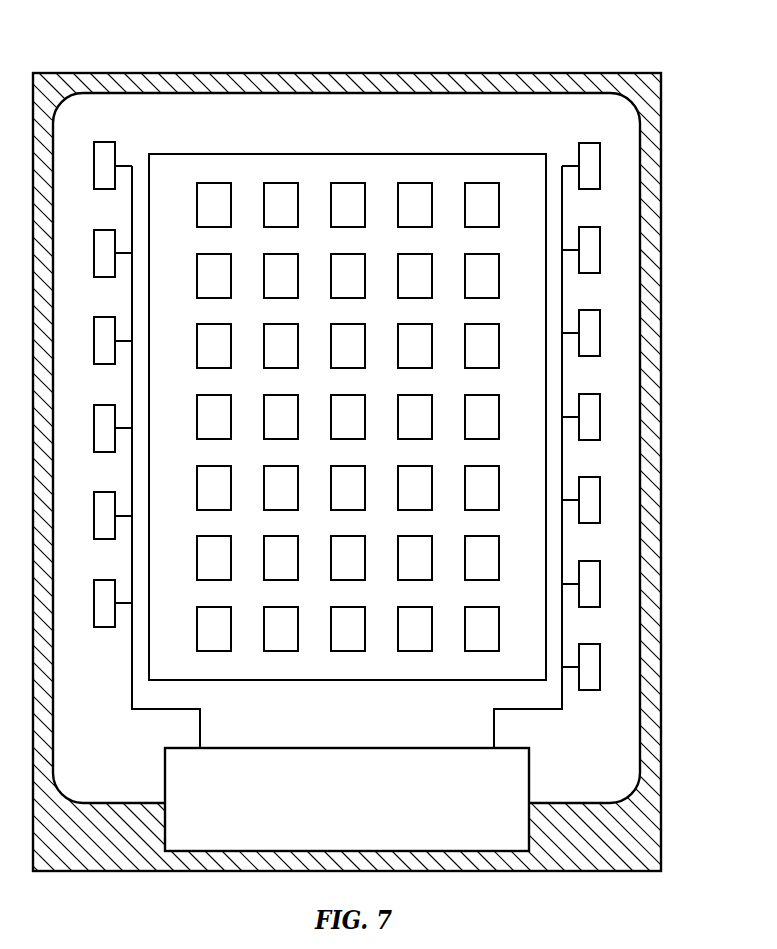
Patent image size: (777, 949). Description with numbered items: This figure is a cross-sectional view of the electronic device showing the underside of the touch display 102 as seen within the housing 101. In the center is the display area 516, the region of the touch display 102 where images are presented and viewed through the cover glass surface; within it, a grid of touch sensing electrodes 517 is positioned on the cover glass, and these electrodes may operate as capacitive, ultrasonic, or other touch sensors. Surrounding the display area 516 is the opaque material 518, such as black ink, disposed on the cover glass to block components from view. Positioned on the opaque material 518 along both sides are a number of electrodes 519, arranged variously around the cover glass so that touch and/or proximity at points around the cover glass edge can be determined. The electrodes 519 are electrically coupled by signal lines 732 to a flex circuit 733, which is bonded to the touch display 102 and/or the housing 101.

The housing 101 is at (67, 73).
The touch display 102 is at (656, 234).
The display area 516 is at (378, 154).
The touch sensing electrodes 517 is at (282, 170).
The opaque material 518 is at (173, 108).
The electrode 519 is at (102, 142).
The signal lines 732 is at (202, 730).
The flex circuit 733 is at (531, 831).